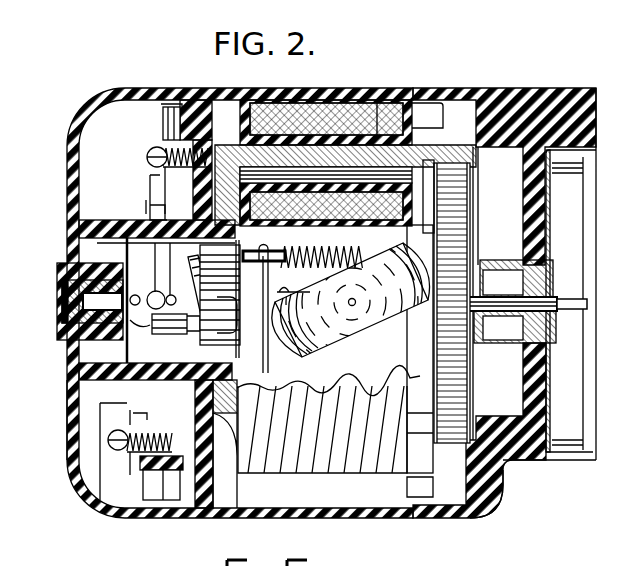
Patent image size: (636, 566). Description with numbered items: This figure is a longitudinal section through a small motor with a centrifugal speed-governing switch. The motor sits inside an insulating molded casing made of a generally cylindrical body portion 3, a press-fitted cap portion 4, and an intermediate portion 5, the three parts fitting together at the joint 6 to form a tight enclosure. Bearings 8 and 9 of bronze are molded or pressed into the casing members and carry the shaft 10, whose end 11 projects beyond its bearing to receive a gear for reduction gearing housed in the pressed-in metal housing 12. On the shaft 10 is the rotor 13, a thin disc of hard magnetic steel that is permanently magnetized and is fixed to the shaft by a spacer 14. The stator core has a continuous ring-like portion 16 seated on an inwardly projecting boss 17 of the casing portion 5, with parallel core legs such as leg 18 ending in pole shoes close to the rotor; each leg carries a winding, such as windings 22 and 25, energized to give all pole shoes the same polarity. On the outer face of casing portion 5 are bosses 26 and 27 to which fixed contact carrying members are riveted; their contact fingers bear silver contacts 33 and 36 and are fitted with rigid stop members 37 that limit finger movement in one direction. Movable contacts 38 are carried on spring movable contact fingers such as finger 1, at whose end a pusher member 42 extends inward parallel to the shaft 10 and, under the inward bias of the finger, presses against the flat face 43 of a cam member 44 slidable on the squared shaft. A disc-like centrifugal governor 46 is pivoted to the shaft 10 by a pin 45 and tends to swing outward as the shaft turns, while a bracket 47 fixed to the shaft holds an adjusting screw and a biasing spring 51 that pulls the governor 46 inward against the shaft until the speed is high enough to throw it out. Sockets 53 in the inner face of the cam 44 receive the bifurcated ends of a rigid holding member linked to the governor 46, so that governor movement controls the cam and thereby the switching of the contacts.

The movable contact finger 1 is at (102, 430).
The body portion 3 is at (470, 150).
The cap portion 4 is at (68, 447).
The intermediate portion 5 is at (202, 505).
The casing joint 6 is at (196, 100).
The bearing 8 is at (556, 323).
The bearing 9 is at (63, 283).
The shaft 10 is at (520, 292).
The shaft end 11 is at (583, 304).
The metal housing 12 is at (547, 393).
The rotor 13 is at (484, 463).
The spacer 14 is at (471, 316).
The ring-like core portion 16 is at (238, 147).
The inwardly projecting boss 17 is at (200, 200).
The core leg 18 is at (374, 125).
The winding 22 is at (310, 98).
The winding 25 is at (353, 466).
The projecting boss 26 is at (175, 110).
The projecting boss 27 is at (163, 480).
The fixed contact 33 is at (140, 295).
The fixed contact 36 is at (125, 290).
The rigid stop member 37 is at (150, 213).
The movable contact 38 is at (128, 322).
The pusher member 42 is at (170, 334).
The cam face 43 is at (209, 342).
The cam member 44 is at (240, 340).
The pin 45 is at (354, 305).
The centrifugal governor 46 is at (331, 338).
The bracket 47 is at (268, 243).
The biasing spring 51 is at (322, 250).
The socket 53 is at (277, 290).